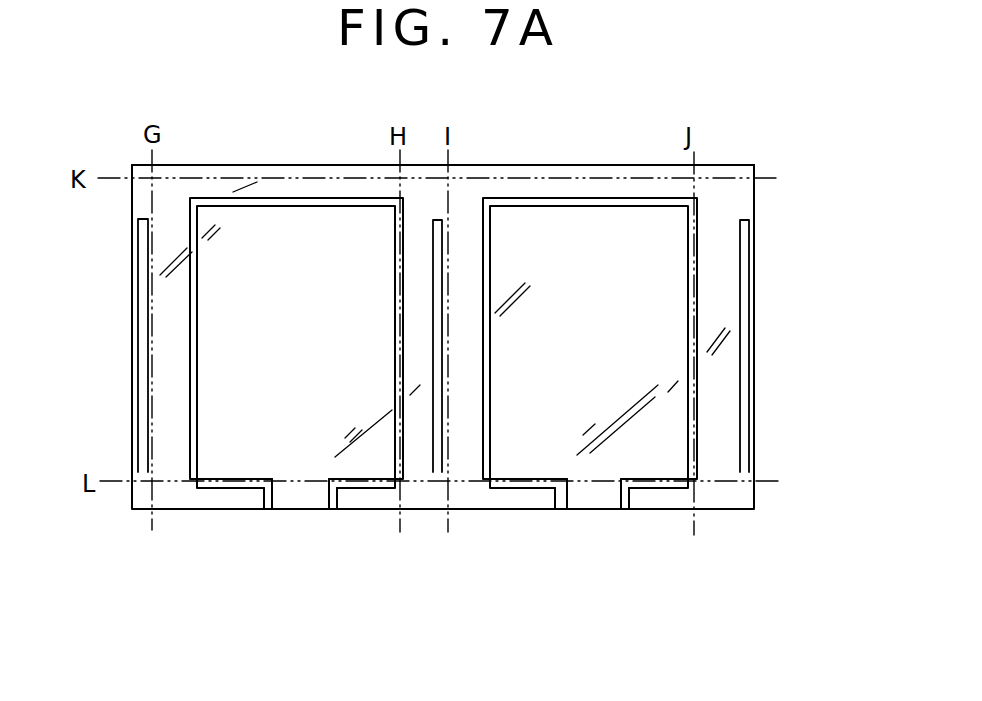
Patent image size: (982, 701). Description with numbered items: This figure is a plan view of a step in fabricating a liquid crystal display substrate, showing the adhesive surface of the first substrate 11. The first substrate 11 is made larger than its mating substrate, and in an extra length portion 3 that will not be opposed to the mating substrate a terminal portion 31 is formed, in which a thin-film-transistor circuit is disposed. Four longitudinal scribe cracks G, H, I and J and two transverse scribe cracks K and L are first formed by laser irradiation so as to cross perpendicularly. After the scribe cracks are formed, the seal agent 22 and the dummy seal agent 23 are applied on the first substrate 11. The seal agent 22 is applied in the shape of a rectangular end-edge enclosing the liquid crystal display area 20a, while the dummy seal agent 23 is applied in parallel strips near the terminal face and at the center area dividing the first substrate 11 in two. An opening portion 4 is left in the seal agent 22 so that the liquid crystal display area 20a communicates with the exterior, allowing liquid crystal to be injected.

The first substrate 11 is at (585, 147).
The extra length portion 3 is at (325, 190).
The terminal portion 31 is at (172, 200).
The dummy seal agent 23 is at (143, 261).
The liquid crystal display area 20a is at (228, 382).
The seal agent 22 is at (265, 495).
The opening portion 4 is at (300, 498).